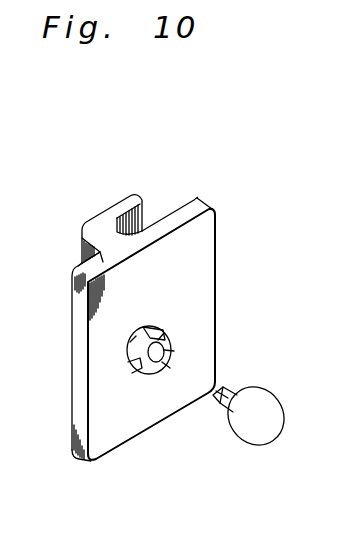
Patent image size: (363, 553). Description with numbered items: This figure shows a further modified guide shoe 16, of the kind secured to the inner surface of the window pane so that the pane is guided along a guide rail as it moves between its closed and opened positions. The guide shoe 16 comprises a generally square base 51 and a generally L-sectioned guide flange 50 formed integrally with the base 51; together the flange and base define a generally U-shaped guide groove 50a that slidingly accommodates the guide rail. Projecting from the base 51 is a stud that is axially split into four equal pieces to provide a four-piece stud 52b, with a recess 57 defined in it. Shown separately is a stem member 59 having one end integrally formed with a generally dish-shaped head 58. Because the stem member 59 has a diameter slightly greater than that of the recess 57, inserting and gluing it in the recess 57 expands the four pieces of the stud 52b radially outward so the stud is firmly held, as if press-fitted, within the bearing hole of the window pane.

The guide shoe 16 is at (203, 184).
The guide flange 50 is at (118, 213).
The guide groove 50a is at (136, 216).
The base 51 is at (198, 250).
The four-piece stud 52b is at (169, 342).
The recess 57 is at (167, 373).
The dish-shaped head 58 is at (262, 410).
The stem member 59 is at (218, 404).